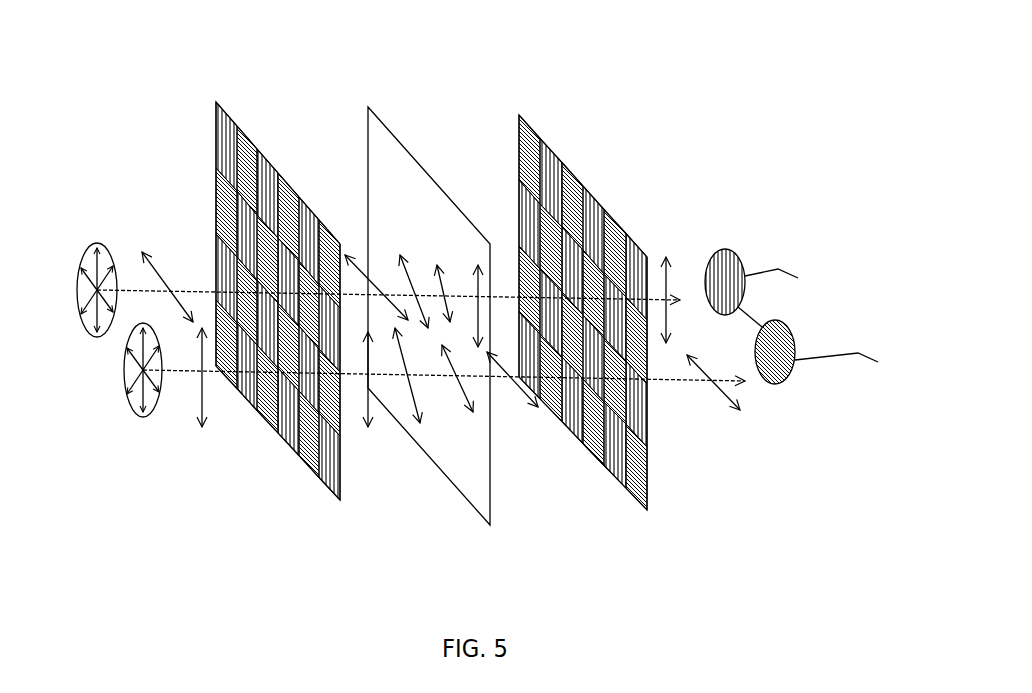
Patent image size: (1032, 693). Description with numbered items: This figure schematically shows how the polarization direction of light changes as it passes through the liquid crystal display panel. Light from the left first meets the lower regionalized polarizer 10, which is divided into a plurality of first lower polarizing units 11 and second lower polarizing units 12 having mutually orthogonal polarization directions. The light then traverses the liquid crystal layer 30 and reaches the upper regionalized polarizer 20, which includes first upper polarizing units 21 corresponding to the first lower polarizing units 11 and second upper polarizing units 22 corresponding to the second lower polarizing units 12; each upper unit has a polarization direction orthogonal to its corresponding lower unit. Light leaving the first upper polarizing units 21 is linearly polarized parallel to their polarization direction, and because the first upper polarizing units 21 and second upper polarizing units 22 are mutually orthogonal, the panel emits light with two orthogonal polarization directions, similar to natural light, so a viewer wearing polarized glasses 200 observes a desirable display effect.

The lower regionalized polarizer 10 is at (265, 304).
The first lower polarizing units 11 is at (282, 435).
The second lower polarizing units 12 is at (308, 470).
The upper regionalized polarizer 20 is at (583, 310).
The first upper polarizing units 21 is at (595, 430).
The second upper polarizing units 22 is at (616, 445).
The liquid crystal layer 30 is at (381, 141).
The polarized glasses 200 is at (773, 302).